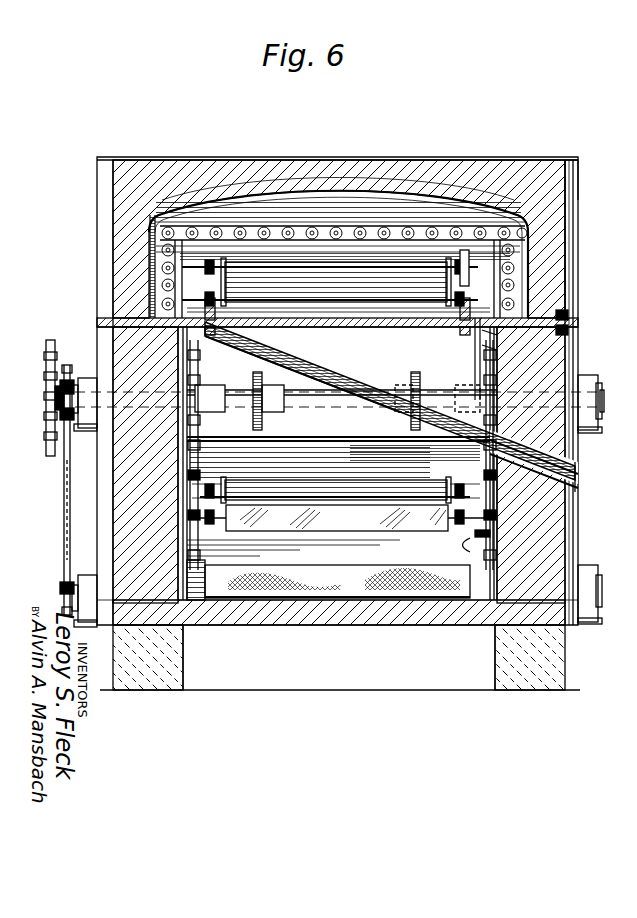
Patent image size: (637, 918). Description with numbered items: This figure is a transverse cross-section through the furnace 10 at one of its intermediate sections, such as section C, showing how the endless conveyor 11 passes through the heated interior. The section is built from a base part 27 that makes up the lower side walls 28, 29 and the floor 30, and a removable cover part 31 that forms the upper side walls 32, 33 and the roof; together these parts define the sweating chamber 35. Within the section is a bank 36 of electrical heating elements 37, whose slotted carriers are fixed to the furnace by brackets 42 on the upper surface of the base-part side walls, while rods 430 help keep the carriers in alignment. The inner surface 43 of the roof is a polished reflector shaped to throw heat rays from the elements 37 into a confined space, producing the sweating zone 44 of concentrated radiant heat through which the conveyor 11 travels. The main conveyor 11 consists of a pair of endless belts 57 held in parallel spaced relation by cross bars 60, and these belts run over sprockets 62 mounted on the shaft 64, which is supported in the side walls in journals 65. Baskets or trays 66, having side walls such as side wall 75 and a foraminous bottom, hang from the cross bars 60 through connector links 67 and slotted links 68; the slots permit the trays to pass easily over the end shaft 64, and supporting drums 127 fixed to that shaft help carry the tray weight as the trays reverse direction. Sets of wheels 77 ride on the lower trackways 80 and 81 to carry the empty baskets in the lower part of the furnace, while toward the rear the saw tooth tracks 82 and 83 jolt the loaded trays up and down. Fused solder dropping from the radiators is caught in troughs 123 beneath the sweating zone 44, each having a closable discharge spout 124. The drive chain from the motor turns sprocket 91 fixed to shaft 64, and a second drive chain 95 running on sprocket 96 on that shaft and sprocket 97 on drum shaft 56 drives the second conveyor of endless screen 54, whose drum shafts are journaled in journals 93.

The furnace 10 is at (238, 143).
The endless conveyor 11 is at (548, 296).
The base part 27 is at (586, 521).
The side wall 28 is at (548, 492).
The side wall 29 is at (110, 488).
The floor 30 is at (410, 612).
The removable cover part 31 is at (358, 160).
The upper side wall 32 is at (565, 232).
The upper side wall 33 is at (160, 262).
The sweating chamber 35 is at (272, 200).
The bank of electrical heating elements 36 is at (375, 222).
The electrical heating elements 37 is at (190, 232).
The brackets 42 is at (562, 318).
The inner surface of the roof 43 is at (312, 192).
The sweating zone 44 is at (402, 250).
The endless screen 54 is at (305, 606).
The drum shaft 56 is at (200, 590).
The endless belts 57 is at (175, 275).
The cross bars 60 is at (346, 308).
The sprockets 62 is at (193, 432).
The shaft 64 is at (225, 394).
The journals 65 is at (88, 378).
The baskets or trays 66 is at (352, 526).
The connector links 67 is at (470, 318).
The slotted links 68 is at (447, 282).
The side wall of tray 75 is at (340, 492).
The sets of wheels 77 is at (168, 250).
The trackway 80 is at (478, 540).
The trackway 81 is at (110, 556).
The saw tooth shaped track 82 is at (478, 318).
The saw tooth shaped track 83 is at (250, 340).
The sprocket 91 is at (66, 372).
The journals 93 is at (85, 575).
The second drive chain 95 is at (66, 512).
The sprocket 96 is at (47, 366).
The sprocket 97 is at (66, 590).
The troughs 123 is at (325, 376).
The closable discharge spouts 124 is at (560, 460).
The supporting drums 127 is at (262, 384).
The rods 430 is at (575, 198).
The intermediate section C is at (469, 153).